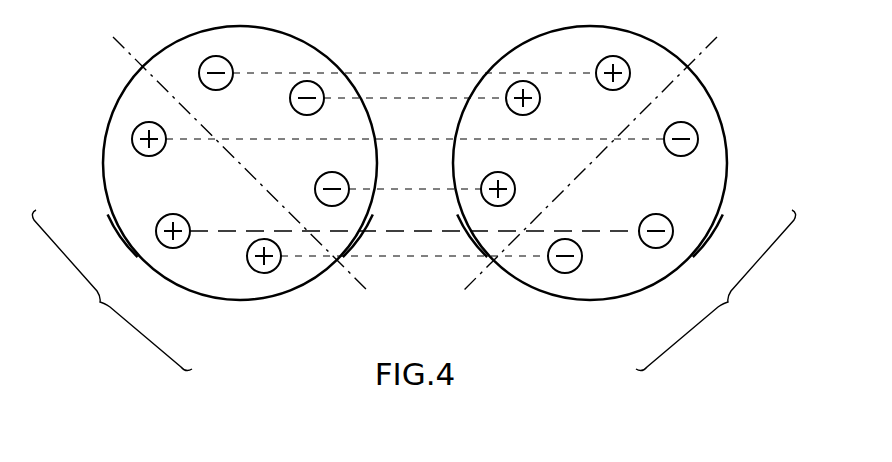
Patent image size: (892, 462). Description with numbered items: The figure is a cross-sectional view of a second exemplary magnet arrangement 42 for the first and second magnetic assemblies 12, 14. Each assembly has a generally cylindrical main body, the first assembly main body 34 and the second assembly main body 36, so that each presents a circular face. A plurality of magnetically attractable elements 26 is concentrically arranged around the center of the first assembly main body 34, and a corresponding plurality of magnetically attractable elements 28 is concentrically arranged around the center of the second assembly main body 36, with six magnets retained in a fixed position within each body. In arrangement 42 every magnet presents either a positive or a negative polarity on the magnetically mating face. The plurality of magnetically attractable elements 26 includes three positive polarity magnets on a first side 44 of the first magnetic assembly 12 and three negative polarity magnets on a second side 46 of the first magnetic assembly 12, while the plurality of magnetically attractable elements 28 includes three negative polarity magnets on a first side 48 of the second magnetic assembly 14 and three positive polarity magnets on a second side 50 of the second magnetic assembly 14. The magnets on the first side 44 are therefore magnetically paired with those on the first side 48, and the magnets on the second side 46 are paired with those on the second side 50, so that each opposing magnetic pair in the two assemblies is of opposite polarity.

The first magnetic assembly 12 is at (240, 152).
The second magnetic assembly 14 is at (601, 152).
The first assembly main body 34 is at (297, 53).
The second assembly main body 36 is at (647, 53).
The arrangement for magnets 42 is at (729, 81).
The first side of first magnetic assembly 44 is at (121, 238).
The second side of first magnetic assembly 46 is at (364, 234).
The first side of second magnetic assembly 48 is at (466, 234).
The second side of second magnetic assembly 50 is at (709, 239).
The plurality of magnetically attractable elements 26 is at (112, 290).
The plurality of magnetically attractable elements 28 is at (716, 290).